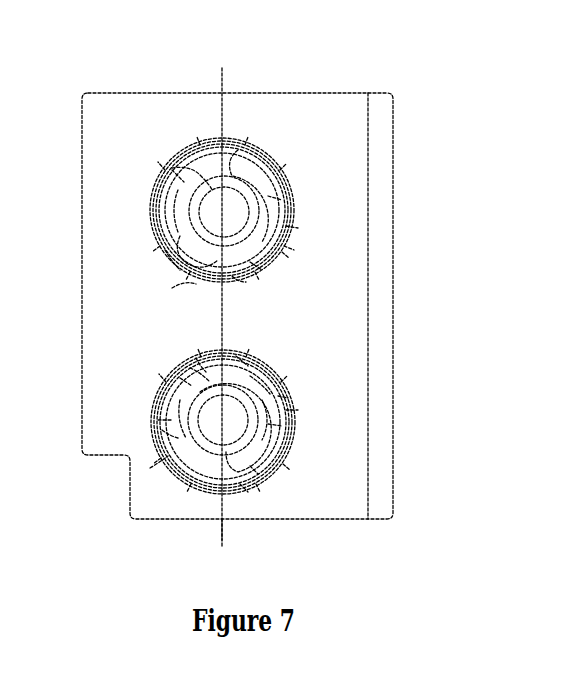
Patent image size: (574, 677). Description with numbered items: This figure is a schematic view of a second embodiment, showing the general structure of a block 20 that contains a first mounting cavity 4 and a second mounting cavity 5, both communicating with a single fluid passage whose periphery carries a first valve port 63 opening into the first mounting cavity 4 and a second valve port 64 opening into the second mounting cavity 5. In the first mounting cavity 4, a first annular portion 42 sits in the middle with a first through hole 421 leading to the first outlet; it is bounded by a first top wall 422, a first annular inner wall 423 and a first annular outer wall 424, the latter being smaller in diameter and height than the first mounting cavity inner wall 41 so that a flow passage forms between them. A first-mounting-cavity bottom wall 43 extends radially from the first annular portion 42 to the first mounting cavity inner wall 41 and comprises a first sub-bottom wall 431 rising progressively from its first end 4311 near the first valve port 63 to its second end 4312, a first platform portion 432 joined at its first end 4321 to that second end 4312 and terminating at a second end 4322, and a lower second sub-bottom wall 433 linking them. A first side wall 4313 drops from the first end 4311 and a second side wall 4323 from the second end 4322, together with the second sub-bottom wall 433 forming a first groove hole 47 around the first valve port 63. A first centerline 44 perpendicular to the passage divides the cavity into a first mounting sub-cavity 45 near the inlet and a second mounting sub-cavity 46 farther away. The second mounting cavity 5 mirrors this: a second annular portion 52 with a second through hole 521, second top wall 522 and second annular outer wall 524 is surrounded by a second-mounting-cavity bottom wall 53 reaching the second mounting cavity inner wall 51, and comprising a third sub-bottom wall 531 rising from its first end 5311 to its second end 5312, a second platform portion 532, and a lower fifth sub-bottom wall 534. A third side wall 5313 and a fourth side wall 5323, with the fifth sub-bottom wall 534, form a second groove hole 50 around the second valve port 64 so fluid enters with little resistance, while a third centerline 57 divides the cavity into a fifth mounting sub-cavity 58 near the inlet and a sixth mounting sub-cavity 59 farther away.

The block 20 is at (342, 82).
The third centerline 57 is at (220, 68).
The second mounting cavity 5 is at (158, 186).
The second-mounting-cavity bottom wall 53 is at (156, 200).
The third sub-bottom wall 531 is at (292, 178).
The second platform portion 532 is at (246, 146).
The fourth side wall 5323 is at (150, 220).
The second annular portion 52 is at (166, 177).
The second through hole 521 is at (182, 182).
The second top wall 522 is at (185, 158).
The second end of the third sub-bottom wall 5312 is at (270, 162).
The fifth mounting sub-cavity 58 is at (170, 178).
The second annular outer wall 524 is at (282, 200).
The sixth mounting sub-cavity 59 is at (298, 228).
The first end of the third sub-bottom wall 5311 is at (292, 250).
The third side wall 5313 is at (262, 270).
The fifth sub-bottom wall 534 is at (238, 280).
The second groove hole 50 is at (172, 262).
The second valve port 64 is at (176, 286).
The second mounting cavity inner wall 51 is at (182, 283).
The first mounting cavity 4 is at (160, 455).
The first-mounting-cavity bottom wall 43 is at (296, 465).
The first sub-bottom wall 431 is at (290, 452).
The first platform portion 432 is at (160, 394).
The second side wall 4323 is at (163, 376).
The first annular portion 42 is at (176, 455).
The first through hole 421 is at (185, 462).
The first top wall 422 is at (196, 480).
The first mounting cavity inner wall 41 is at (200, 356).
The first valve port 63 is at (200, 368).
The first groove hole 47 is at (190, 380).
The second end of the first platform portion 4322 is at (158, 420).
The first annular inner wall 423 is at (165, 430).
The second mounting sub-cavity 46 is at (150, 468).
The first centerline 44 is at (218, 526).
The second sub-bottom wall 433 is at (242, 356).
The first side wall 4313 is at (256, 376).
The first end of the first sub-bottom wall 4311 is at (284, 396).
The first mounting sub-cavity 45 is at (298, 410).
The first annular outer wall 424 is at (282, 426).
The second end of the first sub-bottom wall 4312 is at (256, 472).
The first end of the first platform portion 4321 is at (246, 490).